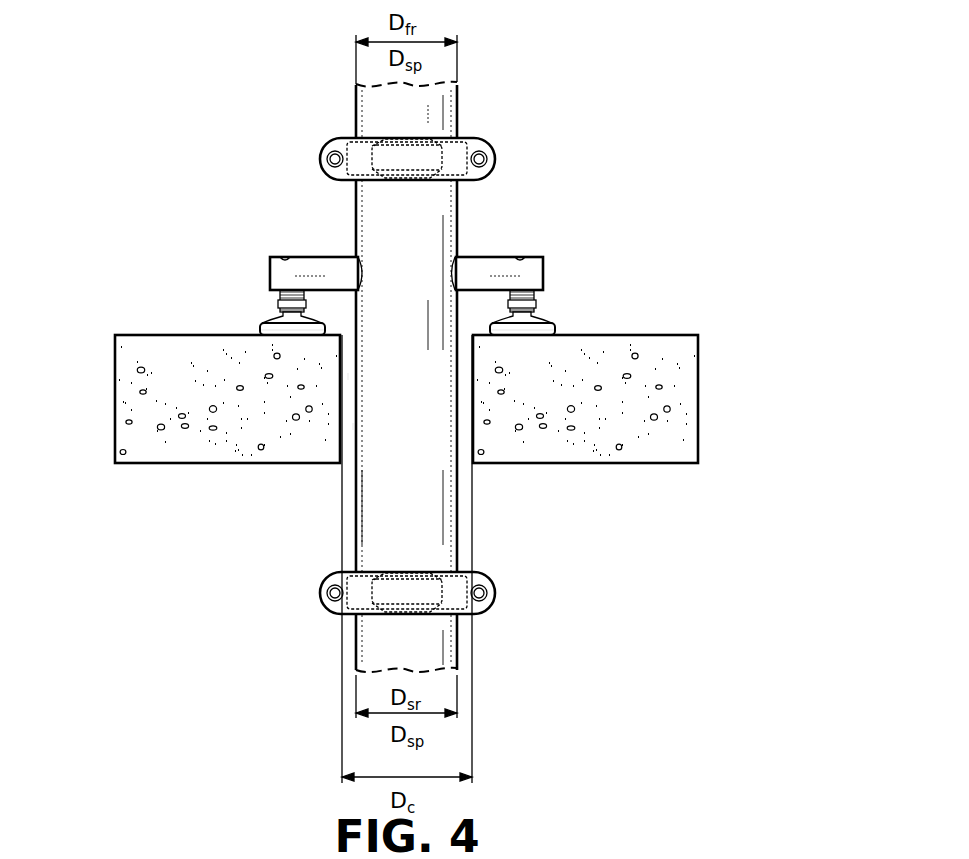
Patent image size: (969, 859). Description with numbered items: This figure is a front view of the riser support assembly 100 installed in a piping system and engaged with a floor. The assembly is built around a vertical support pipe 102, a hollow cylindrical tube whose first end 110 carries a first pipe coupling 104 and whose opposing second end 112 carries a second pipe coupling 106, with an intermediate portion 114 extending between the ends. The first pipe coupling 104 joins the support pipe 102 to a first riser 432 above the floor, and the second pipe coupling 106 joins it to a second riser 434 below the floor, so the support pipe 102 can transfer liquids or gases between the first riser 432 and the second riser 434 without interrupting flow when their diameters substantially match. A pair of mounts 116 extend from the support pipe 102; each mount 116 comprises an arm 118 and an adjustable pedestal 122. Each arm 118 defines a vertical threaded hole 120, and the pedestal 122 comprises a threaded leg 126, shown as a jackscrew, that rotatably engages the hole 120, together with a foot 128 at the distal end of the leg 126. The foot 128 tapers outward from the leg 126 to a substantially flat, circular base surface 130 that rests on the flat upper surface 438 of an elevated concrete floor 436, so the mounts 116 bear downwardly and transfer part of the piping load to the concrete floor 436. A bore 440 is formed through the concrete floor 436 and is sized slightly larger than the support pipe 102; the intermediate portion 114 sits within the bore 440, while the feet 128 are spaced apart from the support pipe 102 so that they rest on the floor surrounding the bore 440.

The riser support assembly 100 is at (215, 180).
The support pipe 102 is at (482, 503).
The first pipe coupling 104 is at (478, 140).
The second pipe coupling 106 is at (485, 575).
The first end 110 is at (355, 195).
The second end 112 is at (357, 532).
The intermediate portion 114 is at (353, 423).
The mount 116 is at (257, 264).
The arm 118 is at (490, 257).
The hole 120 is at (528, 250).
The adjustable pedestal 122 is at (267, 300).
The leg 126 is at (535, 302).
The foot 128 is at (552, 323).
The base surface 130 is at (285, 338).
The first riser 432 is at (445, 115).
The second riser 434 is at (428, 643).
The concrete floor 436 is at (95, 418).
The upper surface 438 is at (152, 333).
The bore 440 is at (348, 373).